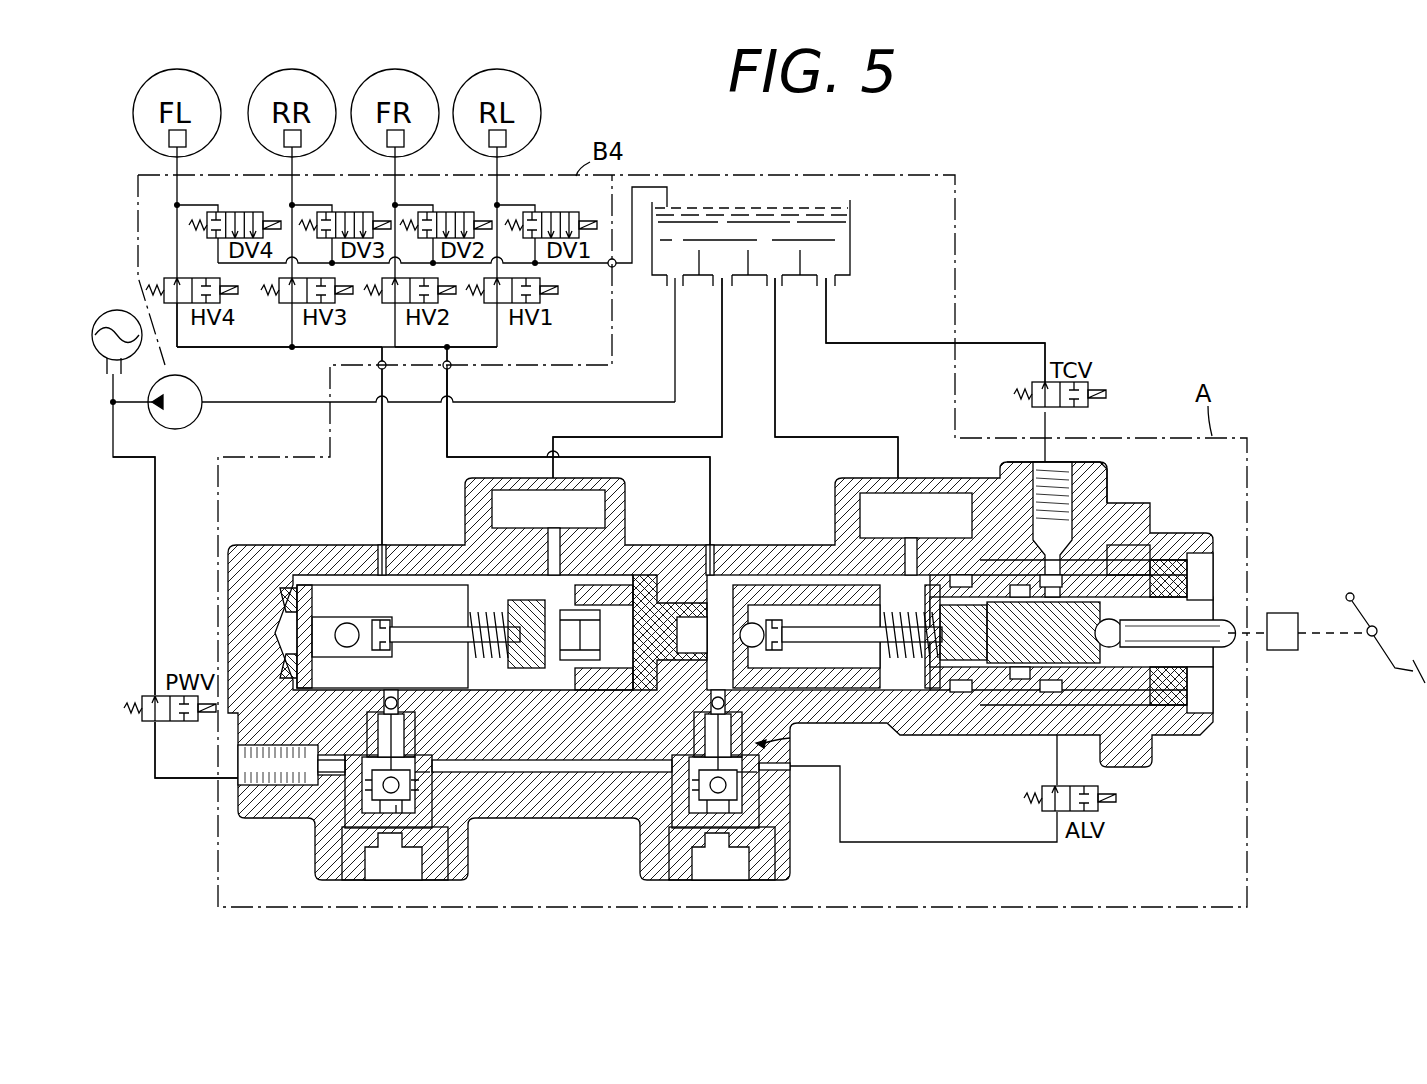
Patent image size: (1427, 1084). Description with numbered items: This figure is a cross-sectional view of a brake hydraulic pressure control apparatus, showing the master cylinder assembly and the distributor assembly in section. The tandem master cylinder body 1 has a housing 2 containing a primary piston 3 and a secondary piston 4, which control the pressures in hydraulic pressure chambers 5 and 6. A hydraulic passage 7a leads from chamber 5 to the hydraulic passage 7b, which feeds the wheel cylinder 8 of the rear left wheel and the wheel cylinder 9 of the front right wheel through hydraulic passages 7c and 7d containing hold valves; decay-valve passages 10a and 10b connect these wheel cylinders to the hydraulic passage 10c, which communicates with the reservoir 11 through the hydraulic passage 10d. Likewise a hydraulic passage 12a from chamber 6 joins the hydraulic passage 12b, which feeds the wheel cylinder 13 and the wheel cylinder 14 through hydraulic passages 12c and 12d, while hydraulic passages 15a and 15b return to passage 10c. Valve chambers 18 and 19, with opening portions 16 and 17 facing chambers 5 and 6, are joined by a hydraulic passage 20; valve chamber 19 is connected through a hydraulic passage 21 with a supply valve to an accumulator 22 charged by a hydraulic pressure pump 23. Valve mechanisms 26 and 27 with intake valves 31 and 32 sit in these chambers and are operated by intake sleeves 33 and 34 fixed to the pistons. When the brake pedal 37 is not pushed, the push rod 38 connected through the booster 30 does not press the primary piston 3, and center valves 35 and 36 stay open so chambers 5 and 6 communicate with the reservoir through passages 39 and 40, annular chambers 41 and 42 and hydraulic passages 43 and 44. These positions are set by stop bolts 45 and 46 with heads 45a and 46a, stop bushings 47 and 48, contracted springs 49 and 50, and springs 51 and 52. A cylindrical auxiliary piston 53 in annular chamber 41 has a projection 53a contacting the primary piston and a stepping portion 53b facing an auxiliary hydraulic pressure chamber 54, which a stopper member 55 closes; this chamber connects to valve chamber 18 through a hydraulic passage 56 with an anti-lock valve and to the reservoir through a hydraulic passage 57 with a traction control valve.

The tandem master cylinder body 1 is at (1176, 737).
The housing 2 is at (1107, 500).
The primary piston 3 is at (1000, 712).
The secondary piston 4 is at (612, 672).
The hydraulic pressure chamber 5 is at (830, 620).
The hydraulic pressure chamber 6 is at (438, 620).
The hydraulic passage 7a is at (450, 432).
The hydraulic passage 7b is at (451, 367).
The hydraulic passage 7c is at (499, 347).
The hydraulic passage 7d is at (398, 346).
The wheel cylinder 8 is at (514, 140).
The wheel cylinder 9 is at (405, 140).
The hydraulic passage 10a is at (508, 204).
The hydraulic passage 10b is at (415, 204).
The hydraulic passage 10c is at (590, 268).
The hydraulic passage 10d is at (643, 186).
The reservoir 11 is at (852, 234).
The hydraulic passage 12a is at (384, 432).
The hydraulic passage 12b is at (331, 346).
The hydraulic passage 12c is at (291, 345).
The hydraulic passage 12d is at (181, 330).
The wheel cylinder 13 is at (283, 140).
The wheel cylinder 14 is at (168, 140).
The hydraulic passage 15a is at (307, 204).
The hydraulic passage 15b is at (200, 204).
The opening portion 16 is at (715, 700).
The opening portion 17 is at (388, 700).
The valve chamber 18 is at (690, 770).
The valve chamber 19 is at (362, 770).
The hydraulic passage 20 is at (545, 772).
The hydraulic passage 21 is at (152, 510).
The accumulator 22 is at (115, 310).
The hydraulic pressure pump 23 is at (197, 418).
The valve mechanism 26 is at (790, 738).
The valve mechanism 27 is at (410, 800).
The booster 30 is at (1282, 612).
The intake valve 31 is at (680, 790).
The intake valve 32 is at (448, 830).
The intake sleeve 33 is at (770, 575).
The intake sleeve 34 is at (425, 574).
The center valve 35 is at (945, 690).
The center valve 36 is at (535, 670).
The brake pedal 37 is at (1410, 673).
The push rod 38 is at (1240, 620).
The passage 39 is at (1055, 632).
The passage 40 is at (666, 632).
The annular chamber 41 is at (950, 580).
The annular chamber 42 is at (575, 582).
The hydraulic passage 43 is at (902, 448).
The hydraulic passage 44 is at (558, 438).
The stop bolt 45 is at (835, 642).
The head 45a is at (770, 620).
The stop bolt 46 is at (450, 642).
The head 46a is at (372, 628).
The stop bushing 47 is at (690, 600).
The stop bushing 48 is at (288, 590).
The contracted spring 49 is at (840, 680).
The contracted spring 50 is at (430, 740).
The spring 51 is at (925, 690).
The spring 52 is at (440, 735).
The auxiliary piston 53 is at (1168, 560).
The projection 53a is at (955, 700).
The stepping portion 53b is at (1045, 705).
The auxiliary hydraulic pressure chamber 54 is at (1060, 548).
The stopper member 55 is at (1128, 560).
The hydraulic passage 56 is at (935, 842).
The hydraulic passage 57 is at (915, 340).